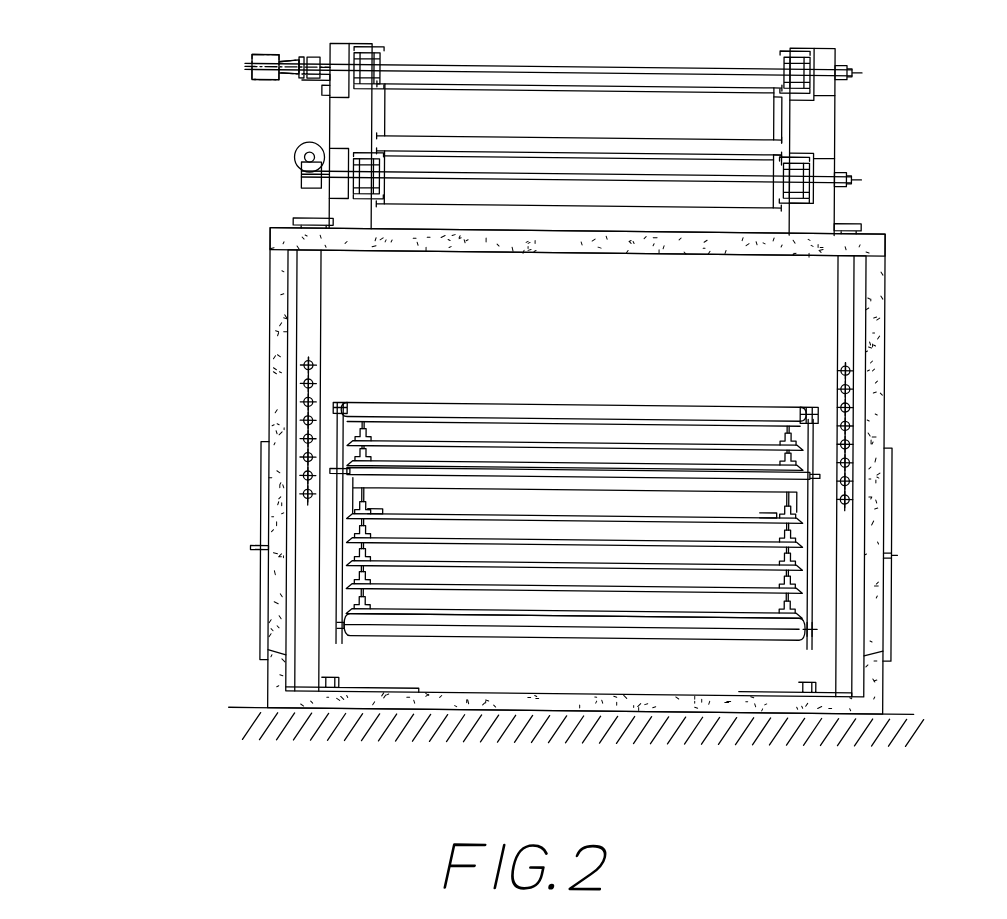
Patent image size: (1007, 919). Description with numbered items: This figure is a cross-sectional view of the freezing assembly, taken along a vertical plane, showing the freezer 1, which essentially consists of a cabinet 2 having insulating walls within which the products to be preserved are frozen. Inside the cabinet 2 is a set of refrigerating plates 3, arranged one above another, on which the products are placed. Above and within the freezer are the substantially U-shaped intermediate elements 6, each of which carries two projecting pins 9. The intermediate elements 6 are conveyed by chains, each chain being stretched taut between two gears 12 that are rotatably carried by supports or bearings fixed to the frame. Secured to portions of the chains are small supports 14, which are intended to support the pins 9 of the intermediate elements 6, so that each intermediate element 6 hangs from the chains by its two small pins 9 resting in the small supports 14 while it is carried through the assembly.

The freezer 1 is at (887, 320).
The cabinet 2 is at (871, 242).
The refrigerating plate 3 is at (537, 520).
The intermediate element 6 is at (552, 200).
The projecting pin 9 is at (777, 148).
The gear 12 is at (363, 181).
The small support 14 is at (363, 138).